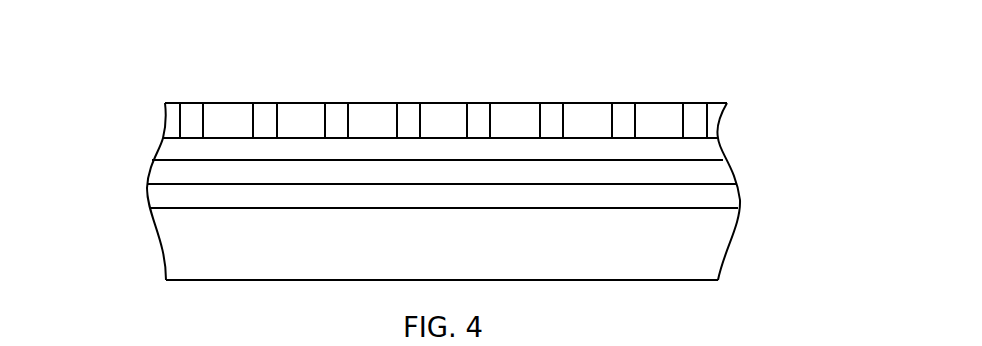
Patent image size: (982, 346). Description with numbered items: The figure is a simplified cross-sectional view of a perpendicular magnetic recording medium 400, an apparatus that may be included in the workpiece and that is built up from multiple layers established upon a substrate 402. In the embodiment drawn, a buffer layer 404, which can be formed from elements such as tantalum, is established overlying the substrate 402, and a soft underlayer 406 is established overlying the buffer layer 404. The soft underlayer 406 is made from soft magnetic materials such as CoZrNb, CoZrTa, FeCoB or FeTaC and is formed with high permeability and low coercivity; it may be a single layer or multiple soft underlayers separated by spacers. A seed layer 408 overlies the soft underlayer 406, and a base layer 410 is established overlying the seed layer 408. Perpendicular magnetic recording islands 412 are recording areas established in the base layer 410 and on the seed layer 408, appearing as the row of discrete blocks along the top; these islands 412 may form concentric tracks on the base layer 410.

The perpendicular magnetic recording medium 400 is at (139, 77).
The substrate 402 is at (158, 237).
The buffer layer 404 is at (738, 202).
The soft underlayer 406 is at (147, 175).
The seed layer 408 is at (720, 146).
The base layer 410 is at (165, 118).
The perpendicular magnetic recording islands 412 is at (623, 103).